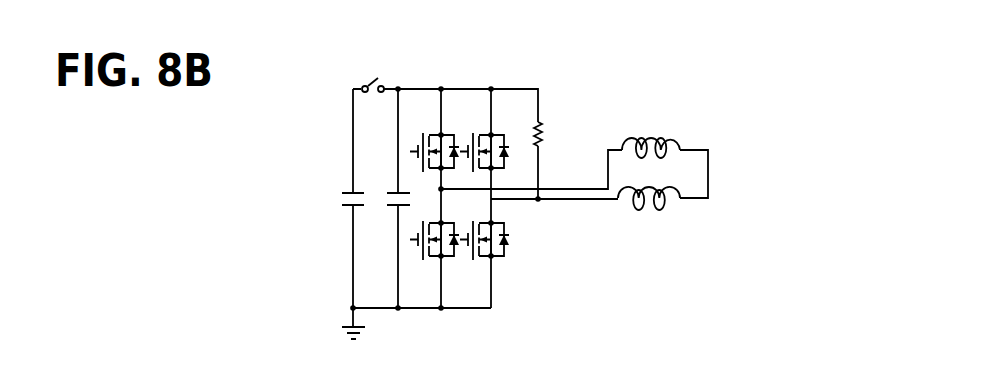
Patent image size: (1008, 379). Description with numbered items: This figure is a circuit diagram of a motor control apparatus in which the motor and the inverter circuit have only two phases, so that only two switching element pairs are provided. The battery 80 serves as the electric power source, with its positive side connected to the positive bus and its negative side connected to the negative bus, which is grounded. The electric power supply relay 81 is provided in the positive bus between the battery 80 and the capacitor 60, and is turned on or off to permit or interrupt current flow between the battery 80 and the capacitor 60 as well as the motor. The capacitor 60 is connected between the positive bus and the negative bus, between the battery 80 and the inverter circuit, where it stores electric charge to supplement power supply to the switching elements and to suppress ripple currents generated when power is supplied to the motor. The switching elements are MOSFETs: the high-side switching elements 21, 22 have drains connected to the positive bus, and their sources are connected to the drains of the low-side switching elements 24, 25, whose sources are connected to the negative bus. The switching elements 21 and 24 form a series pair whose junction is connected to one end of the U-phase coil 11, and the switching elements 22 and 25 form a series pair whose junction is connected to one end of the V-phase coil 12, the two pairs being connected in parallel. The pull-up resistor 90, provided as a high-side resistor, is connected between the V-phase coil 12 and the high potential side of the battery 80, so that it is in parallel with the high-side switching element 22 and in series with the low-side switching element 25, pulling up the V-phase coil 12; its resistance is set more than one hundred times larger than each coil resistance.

The U-phase coil 11 is at (681, 143).
The V-phase coil 12 is at (669, 190).
The switching element 21 is at (447, 134).
The switching element 22 is at (496, 134).
The switching element 24 is at (444, 259).
The switching element 25 is at (496, 259).
The capacitor 60 is at (392, 192).
The battery 80 is at (343, 192).
The electric power supply relay 81 is at (361, 86).
The pull-up resistor 90 is at (541, 127).